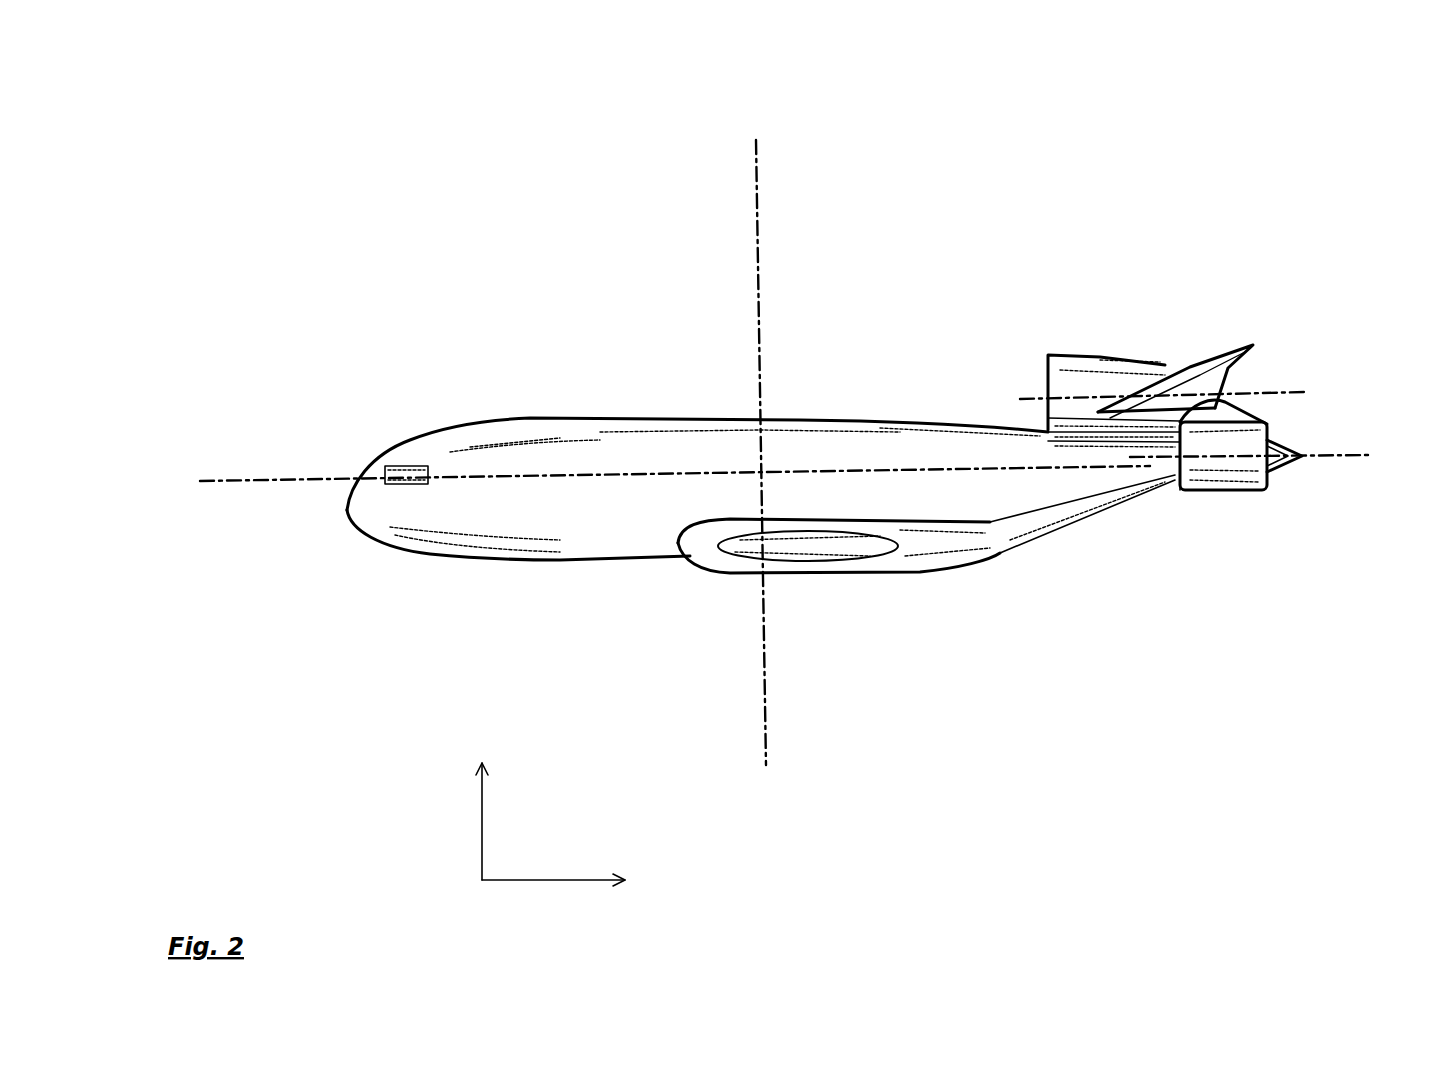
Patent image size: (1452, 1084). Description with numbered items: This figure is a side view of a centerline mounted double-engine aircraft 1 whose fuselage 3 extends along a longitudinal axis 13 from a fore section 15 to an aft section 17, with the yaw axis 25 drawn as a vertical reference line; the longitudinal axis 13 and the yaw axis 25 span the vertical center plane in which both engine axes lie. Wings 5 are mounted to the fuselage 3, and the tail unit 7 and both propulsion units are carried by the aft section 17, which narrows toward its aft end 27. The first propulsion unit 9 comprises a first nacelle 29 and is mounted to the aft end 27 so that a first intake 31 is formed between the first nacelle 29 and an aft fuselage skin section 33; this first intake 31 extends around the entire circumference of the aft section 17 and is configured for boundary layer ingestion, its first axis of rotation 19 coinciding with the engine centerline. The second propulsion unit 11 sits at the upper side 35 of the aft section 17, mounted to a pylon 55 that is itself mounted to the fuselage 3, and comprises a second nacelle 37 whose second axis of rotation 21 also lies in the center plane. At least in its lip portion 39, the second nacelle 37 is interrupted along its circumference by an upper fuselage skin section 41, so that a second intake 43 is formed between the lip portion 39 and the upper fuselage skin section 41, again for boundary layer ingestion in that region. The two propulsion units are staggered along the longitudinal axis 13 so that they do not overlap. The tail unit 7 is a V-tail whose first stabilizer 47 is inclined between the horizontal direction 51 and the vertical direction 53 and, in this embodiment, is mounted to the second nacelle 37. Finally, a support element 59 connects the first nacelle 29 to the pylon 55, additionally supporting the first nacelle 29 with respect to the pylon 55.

The aircraft 1 is at (355, 210).
The fuselage 3 is at (650, 458).
The wings 5 is at (825, 543).
The tail unit 7 is at (1198, 338).
The first propulsion unit 9 is at (1243, 478).
The second propulsion unit 11 is at (1078, 367).
The longitudinal axis 13 is at (260, 472).
The fore section 15 is at (380, 517).
The aft section 17 is at (1120, 488).
The first axis of rotation 19 is at (1335, 455).
The second axis of rotation 21 is at (1302, 393).
The yaw axis 25 is at (752, 160).
The aft end 27 is at (1242, 512).
The first nacelle 29 is at (1250, 435).
The first intake 31 is at (1172, 457).
The aft fuselage skin section 33 is at (1173, 470).
The upper side 35 is at (1078, 310).
The second nacelle 37 is at (1104, 365).
The lip portion 39 is at (1050, 363).
The upper fuselage skin section 41 is at (1035, 432).
The second intake 43 is at (1043, 385).
The first stabilizer 47 is at (1223, 362).
The horizontal direction 51 is at (571, 878).
The vertical direction 53 is at (482, 805).
The pylon 55 is at (1175, 432).
The support element 59 is at (1218, 408).